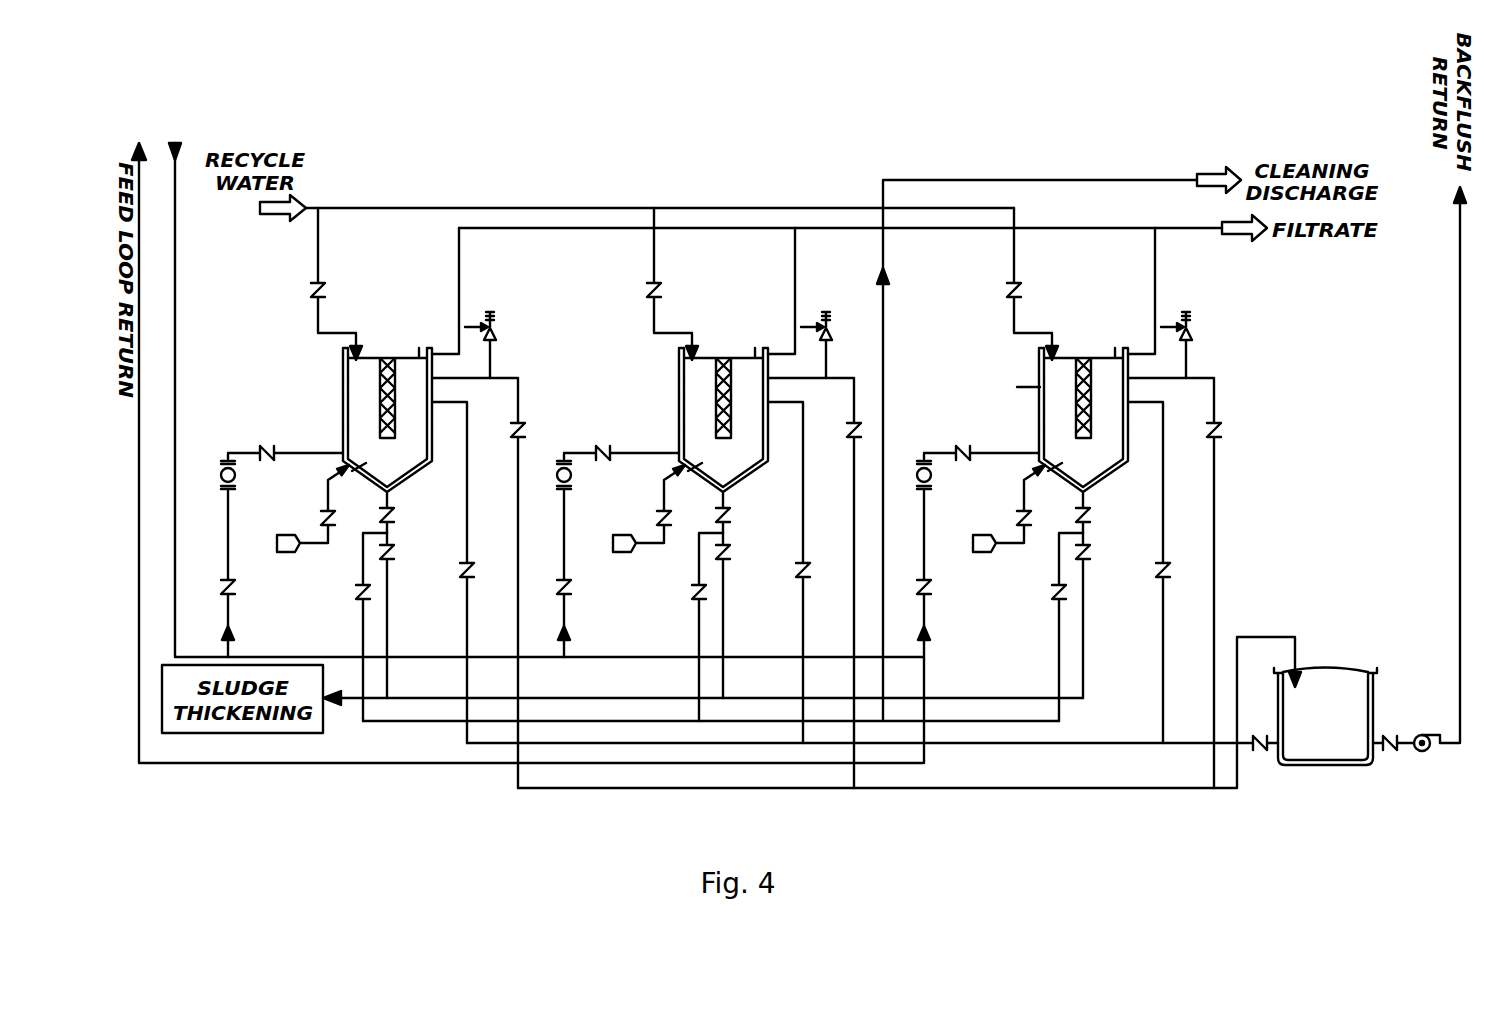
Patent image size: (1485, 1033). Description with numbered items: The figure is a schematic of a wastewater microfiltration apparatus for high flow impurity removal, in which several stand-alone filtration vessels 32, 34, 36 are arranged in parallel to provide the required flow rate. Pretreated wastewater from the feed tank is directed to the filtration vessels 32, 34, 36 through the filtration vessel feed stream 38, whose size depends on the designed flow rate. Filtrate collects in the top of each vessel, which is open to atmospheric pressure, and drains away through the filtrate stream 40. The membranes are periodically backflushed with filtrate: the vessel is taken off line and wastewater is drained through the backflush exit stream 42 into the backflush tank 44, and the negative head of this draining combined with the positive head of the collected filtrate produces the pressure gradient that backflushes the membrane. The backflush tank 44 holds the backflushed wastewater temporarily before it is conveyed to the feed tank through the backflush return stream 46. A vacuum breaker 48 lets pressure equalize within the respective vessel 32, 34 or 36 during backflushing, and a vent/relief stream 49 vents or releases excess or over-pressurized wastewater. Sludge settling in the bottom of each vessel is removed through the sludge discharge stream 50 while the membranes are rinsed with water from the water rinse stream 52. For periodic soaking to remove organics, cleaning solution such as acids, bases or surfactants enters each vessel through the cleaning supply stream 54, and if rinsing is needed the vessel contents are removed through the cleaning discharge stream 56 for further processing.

The filtration vessel 32 is at (408, 480).
The filtration vessel 34 is at (746, 480).
The filtration vessel 36 is at (1110, 480).
The filtration vessel feed stream 38 is at (175, 385).
The filtrate stream 40 is at (459, 285).
The backflush exit stream 42 is at (467, 635).
The backflush tank 44 is at (1332, 686).
The backflush return stream 46 is at (1458, 420).
The vacuum breaker 48 is at (497, 330).
The vent/relief stream 49 is at (854, 547).
The sludge discharge stream 50 is at (387, 640).
The water rinse stream 52 is at (328, 491).
The cleaning supply stream 54 is at (318, 248).
The cleaning discharge stream 56 is at (363, 630).